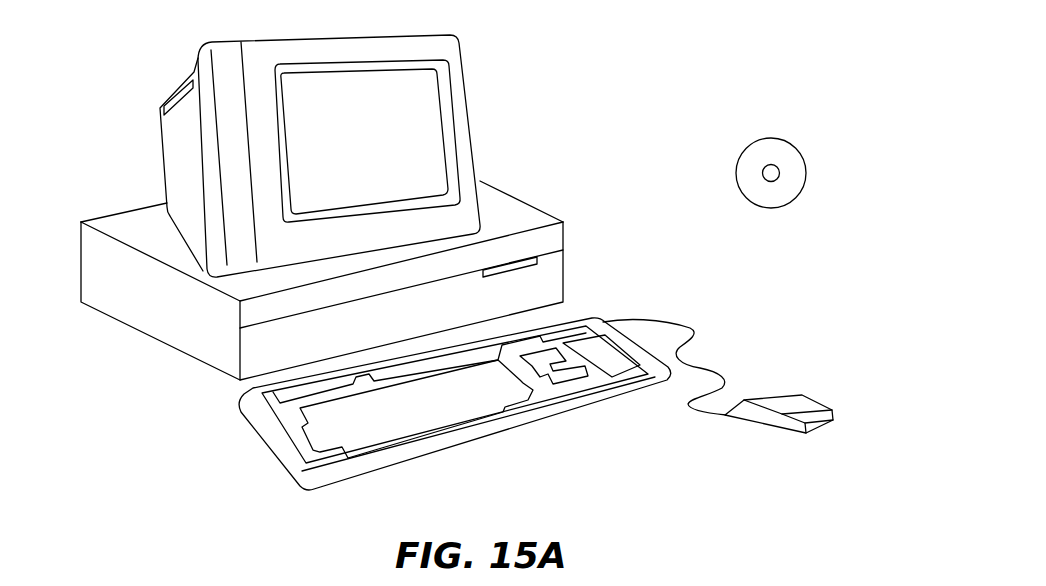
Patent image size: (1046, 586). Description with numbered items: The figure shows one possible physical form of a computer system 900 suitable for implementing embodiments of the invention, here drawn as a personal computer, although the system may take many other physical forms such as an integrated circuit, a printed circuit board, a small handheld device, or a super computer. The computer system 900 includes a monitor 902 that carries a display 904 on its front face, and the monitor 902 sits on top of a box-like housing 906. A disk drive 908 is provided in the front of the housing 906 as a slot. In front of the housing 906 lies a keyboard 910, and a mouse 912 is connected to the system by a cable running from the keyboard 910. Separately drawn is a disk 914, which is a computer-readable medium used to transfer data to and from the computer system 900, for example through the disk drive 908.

The computer system 900 is at (692, 28).
The monitor 902 is at (478, 153).
The display 904 is at (435, 102).
The housing 906 is at (203, 275).
The disk drive 908 is at (538, 252).
The keyboard 910 is at (470, 443).
The mouse 912 is at (820, 400).
The disk 914 is at (790, 137).